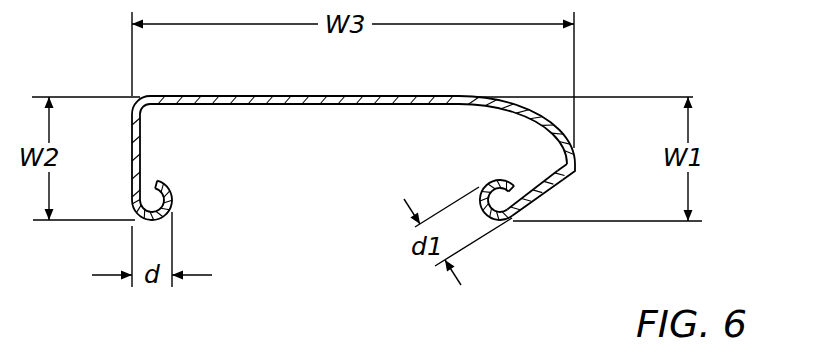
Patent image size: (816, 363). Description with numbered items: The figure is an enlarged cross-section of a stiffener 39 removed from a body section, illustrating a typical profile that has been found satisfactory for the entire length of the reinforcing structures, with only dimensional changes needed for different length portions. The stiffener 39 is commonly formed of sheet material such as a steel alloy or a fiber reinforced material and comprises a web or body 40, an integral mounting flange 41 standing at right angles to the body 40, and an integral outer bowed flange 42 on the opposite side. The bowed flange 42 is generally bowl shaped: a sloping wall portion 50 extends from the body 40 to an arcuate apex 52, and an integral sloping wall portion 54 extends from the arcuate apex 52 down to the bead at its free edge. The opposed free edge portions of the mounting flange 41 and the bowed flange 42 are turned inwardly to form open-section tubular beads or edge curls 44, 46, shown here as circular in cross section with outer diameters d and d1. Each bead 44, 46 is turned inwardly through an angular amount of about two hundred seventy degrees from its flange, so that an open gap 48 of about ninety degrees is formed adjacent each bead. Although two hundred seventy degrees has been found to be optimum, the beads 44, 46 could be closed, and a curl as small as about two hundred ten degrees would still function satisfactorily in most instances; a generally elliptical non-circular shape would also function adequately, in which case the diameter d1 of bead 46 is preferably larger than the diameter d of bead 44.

The stiffener 39 is at (317, 130).
The web or body 40 is at (253, 96).
The mounting flange 41 is at (132, 154).
The outer bowed flange 42 is at (542, 117).
The tubular bead 44 is at (173, 193).
The tubular bead 46 is at (493, 182).
The open gap 48 is at (145, 176).
The sloping wall portion 50 is at (510, 104).
The arcuate apex 52 is at (577, 167).
The sloping wall portion 54 is at (535, 208).